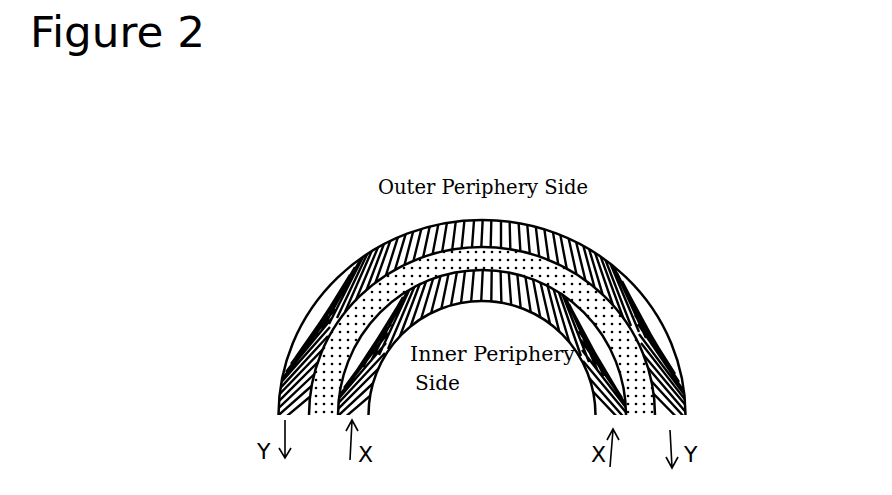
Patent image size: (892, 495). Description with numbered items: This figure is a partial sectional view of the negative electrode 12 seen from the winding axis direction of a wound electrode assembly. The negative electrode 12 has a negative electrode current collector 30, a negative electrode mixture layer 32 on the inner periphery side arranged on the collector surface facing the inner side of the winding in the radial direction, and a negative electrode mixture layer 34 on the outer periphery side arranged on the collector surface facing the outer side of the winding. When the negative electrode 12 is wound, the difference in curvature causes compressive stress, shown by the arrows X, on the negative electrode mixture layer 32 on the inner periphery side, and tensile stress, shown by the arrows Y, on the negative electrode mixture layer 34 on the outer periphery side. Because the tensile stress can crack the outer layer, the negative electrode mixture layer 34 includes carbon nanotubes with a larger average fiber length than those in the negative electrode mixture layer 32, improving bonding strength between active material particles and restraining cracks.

The negative electrode 12 is at (310, 220).
The negative electrode current collector 30 is at (617, 322).
The negative electrode mixture layer on inner periphery side 32 is at (570, 290).
The negative electrode mixture layer on outer periphery side 34 is at (673, 352).